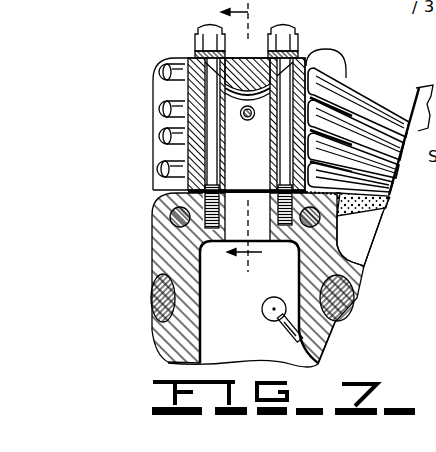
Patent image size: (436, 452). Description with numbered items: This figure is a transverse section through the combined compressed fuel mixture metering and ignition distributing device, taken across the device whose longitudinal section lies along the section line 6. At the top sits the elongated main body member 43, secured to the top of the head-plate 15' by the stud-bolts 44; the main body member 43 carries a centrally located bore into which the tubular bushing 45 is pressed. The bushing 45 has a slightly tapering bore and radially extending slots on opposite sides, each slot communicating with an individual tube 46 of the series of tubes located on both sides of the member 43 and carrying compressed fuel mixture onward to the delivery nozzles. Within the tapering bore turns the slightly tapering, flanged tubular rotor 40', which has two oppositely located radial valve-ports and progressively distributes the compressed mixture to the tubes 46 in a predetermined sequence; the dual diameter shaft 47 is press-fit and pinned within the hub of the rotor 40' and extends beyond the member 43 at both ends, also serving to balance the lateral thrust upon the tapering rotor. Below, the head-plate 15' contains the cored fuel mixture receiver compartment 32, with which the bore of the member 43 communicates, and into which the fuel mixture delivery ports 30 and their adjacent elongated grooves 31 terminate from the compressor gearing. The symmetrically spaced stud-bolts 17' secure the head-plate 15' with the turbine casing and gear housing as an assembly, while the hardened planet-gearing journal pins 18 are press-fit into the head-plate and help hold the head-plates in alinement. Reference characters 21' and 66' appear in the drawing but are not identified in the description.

The section line 6— 6 is at (241, 141).
The head-plate 15' is at (380, 241).
The stud-bolts 17' is at (252, 297).
The planet-gearing journal pins 18 is at (347, 307).
The cylinder head 21' is at (397, 8).
The fuel mixture delivery ports 30 is at (262, 308).
The elongated grooves 31 is at (280, 328).
The fuel mixture receiver compartment 32 is at (313, 353).
The rotor 40' is at (194, 119).
The main body member 43 is at (336, 52).
The stud-bolts 44 is at (286, 29).
The tubular bushing 45 is at (337, 66).
The tubes 46 is at (357, 98).
The dual diameter shaft 47 is at (248, 122).
The gasket 66' is at (364, 214).